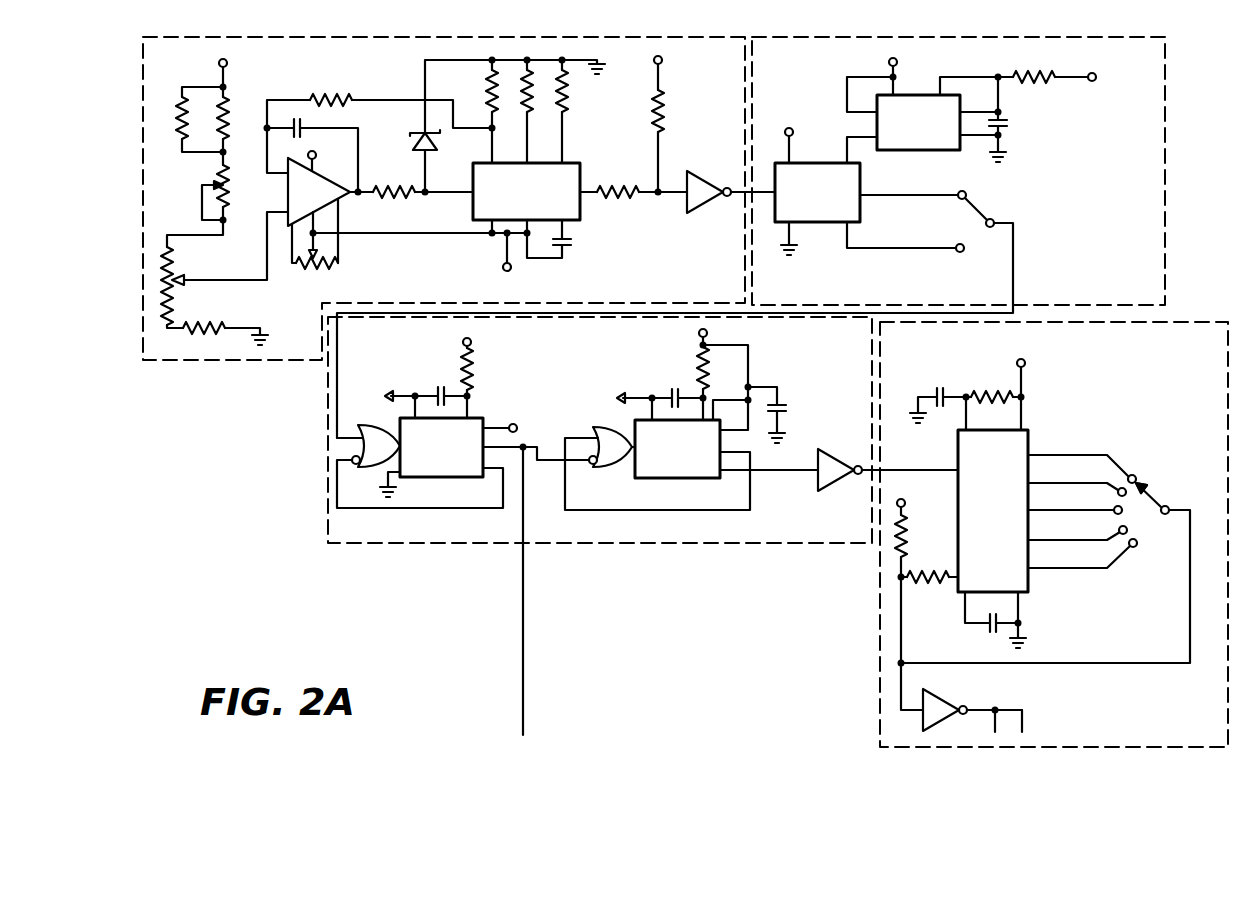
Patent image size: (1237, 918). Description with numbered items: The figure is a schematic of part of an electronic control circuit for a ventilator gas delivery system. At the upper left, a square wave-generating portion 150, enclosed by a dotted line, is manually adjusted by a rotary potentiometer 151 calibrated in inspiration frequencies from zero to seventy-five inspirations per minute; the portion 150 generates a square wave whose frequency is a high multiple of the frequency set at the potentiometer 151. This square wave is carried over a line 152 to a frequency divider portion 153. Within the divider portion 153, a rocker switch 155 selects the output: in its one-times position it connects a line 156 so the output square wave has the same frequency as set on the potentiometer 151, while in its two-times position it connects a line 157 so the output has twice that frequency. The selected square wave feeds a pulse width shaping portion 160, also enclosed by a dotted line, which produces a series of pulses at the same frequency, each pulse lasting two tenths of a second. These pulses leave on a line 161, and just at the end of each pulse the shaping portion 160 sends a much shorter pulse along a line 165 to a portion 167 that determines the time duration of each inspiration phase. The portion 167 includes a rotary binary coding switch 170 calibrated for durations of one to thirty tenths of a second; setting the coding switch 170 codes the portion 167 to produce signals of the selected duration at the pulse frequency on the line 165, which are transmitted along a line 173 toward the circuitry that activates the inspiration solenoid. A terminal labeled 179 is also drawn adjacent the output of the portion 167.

The square wave-generating portion 150 is at (235, 362).
The rotary potentiometer 151 is at (171, 267).
The line 152 is at (745, 200).
The frequency divider portion 153 is at (1167, 162).
The rocker switch 155 is at (980, 214).
The line 156 is at (910, 194).
The line 157 is at (903, 251).
The pulse width shaping portion 160 is at (328, 513).
The line 161 is at (520, 690).
The line 165 is at (880, 468).
The inspiration duration portion 167 is at (880, 668).
The rotary binary coding switch 170 is at (1158, 490).
The line 173 is at (1024, 720).
The terminal B 179 is at (998, 710).